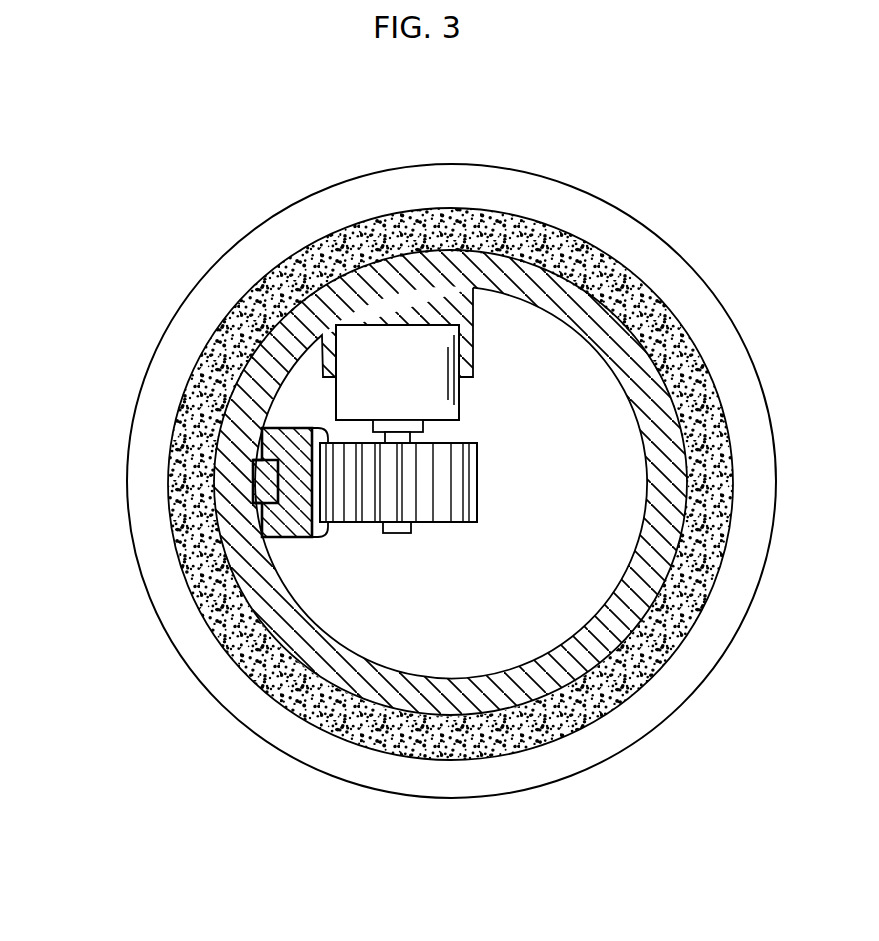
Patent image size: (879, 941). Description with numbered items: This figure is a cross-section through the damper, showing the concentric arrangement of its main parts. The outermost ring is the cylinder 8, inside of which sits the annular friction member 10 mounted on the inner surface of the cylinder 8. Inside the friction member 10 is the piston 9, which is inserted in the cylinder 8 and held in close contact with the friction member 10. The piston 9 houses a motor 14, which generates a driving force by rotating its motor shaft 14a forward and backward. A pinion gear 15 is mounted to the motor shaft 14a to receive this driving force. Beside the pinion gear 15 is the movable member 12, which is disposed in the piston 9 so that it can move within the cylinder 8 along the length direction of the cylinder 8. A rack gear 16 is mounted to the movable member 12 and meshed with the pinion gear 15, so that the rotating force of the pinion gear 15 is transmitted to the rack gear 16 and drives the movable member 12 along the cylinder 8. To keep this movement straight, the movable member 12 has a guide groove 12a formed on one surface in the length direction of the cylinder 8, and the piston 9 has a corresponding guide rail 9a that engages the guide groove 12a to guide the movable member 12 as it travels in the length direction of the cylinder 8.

The cylinder 8 is at (492, 180).
The piston 9 is at (637, 352).
The guide rail 9a is at (262, 452).
The friction member 10 is at (590, 258).
The movable member 12 is at (182, 458).
The guide groove 12a is at (262, 487).
The motor 14 is at (395, 348).
The motor shaft 14a is at (397, 440).
The pinion gear 15 is at (354, 631).
The rack gear 16 is at (322, 540).